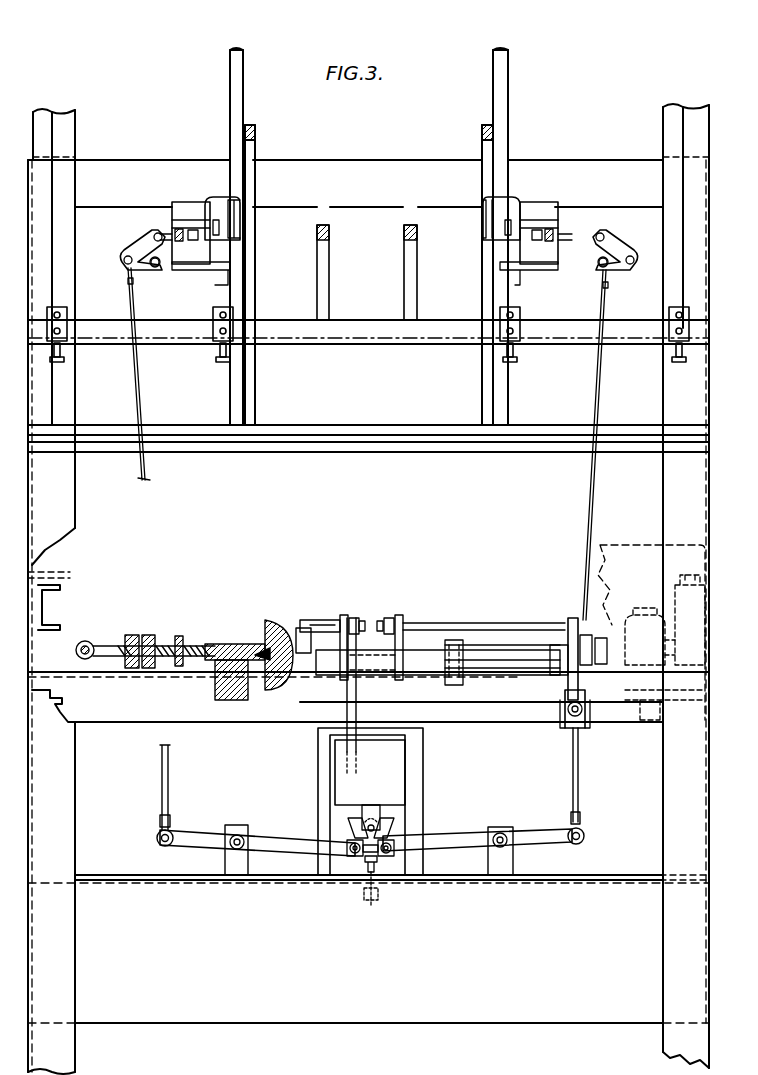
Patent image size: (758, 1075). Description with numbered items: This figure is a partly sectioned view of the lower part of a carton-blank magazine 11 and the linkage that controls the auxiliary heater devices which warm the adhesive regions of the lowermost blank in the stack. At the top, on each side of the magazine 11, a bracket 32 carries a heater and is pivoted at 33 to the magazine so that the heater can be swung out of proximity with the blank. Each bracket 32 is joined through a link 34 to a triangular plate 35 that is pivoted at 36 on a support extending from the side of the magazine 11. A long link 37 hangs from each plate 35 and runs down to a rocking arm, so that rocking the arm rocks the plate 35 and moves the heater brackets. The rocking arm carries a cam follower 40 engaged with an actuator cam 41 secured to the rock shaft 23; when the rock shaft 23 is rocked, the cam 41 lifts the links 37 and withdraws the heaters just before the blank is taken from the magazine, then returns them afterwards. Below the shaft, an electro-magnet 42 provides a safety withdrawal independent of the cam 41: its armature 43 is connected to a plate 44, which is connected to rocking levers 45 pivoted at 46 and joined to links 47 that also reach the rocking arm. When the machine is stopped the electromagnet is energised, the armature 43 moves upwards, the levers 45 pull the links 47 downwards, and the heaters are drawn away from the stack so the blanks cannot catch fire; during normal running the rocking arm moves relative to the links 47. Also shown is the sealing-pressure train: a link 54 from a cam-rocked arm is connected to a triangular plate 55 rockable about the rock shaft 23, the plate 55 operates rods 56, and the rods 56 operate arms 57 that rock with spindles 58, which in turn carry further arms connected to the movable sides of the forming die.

The magazine 11 is at (521, 71).
The rock shaft 23 is at (505, 660).
The bracket 32 is at (220, 200).
The pivot 33 is at (240, 200).
The link 34 is at (192, 233).
The triangular plate 35 is at (143, 237).
The pivot 36 is at (155, 268).
The link 37 is at (141, 388).
The cam follower 40 is at (582, 726).
The actuator cam 41 is at (567, 718).
The electro-magnet 42 is at (398, 778).
The armature 43 is at (390, 823).
The plate 44 is at (373, 852).
The rocking levers 45 is at (288, 838).
The pivot 46 is at (240, 833).
The links 47 is at (170, 782).
The link 54 is at (346, 748).
The triangular plate 55 is at (352, 620).
The rods 56 is at (388, 620).
The arms 57 is at (322, 622).
The spindles 58 is at (647, 614).